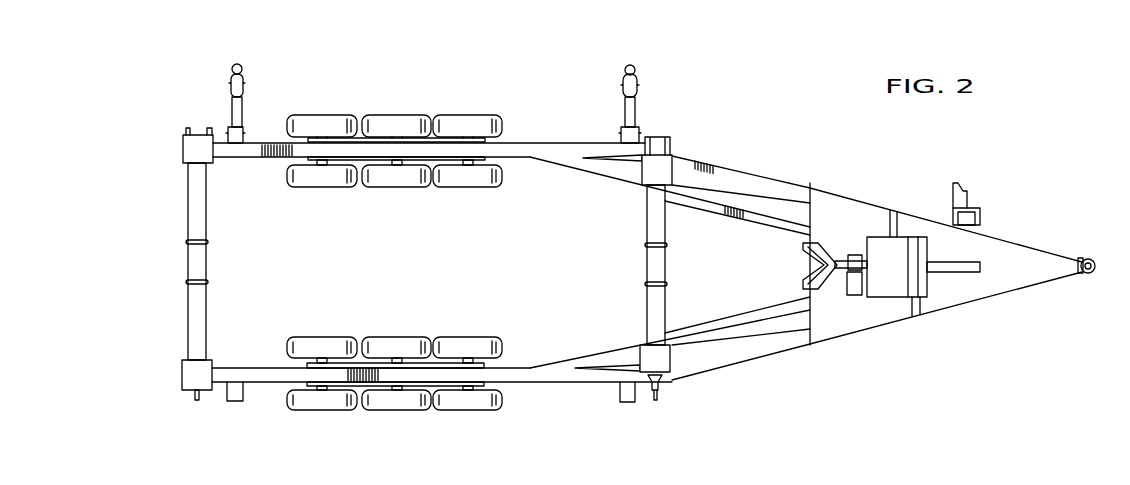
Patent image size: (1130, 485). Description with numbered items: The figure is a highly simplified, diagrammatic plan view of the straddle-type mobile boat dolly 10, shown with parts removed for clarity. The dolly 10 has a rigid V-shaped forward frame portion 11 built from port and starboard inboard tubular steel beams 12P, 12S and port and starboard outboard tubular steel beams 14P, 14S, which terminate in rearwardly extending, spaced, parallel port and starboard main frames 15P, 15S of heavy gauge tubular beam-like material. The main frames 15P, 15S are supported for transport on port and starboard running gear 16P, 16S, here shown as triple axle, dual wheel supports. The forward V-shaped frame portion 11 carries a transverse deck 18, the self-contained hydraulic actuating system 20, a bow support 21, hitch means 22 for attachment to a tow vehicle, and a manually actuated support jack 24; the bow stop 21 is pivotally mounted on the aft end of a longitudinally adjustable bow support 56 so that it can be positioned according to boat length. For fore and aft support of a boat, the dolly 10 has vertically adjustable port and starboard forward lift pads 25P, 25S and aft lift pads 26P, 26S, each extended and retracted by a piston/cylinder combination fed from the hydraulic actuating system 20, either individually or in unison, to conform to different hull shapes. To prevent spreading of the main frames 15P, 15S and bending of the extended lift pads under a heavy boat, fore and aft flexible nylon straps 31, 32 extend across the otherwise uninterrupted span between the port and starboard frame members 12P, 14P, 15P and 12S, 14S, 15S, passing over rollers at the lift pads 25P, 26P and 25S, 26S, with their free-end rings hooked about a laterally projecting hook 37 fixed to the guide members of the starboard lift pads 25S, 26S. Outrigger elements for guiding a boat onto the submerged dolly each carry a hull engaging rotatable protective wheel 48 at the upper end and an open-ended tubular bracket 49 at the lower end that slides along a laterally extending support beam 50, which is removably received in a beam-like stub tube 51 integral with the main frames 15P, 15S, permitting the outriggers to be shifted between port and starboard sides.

The straddle-type mobile boat dolly 10 is at (706, 113).
The V-shaped forward frame portion 11 is at (866, 345).
The port inboard tubular steel beam 12P is at (740, 203).
The starboard inboard tubular steel beam 12S is at (730, 315).
The port outboard tubular steel beam 14P is at (782, 177).
The starboard outboard tubular steel beam 14S is at (766, 357).
The port main frame 15P is at (512, 147).
The starboard main frame 15S is at (508, 383).
The port running gear 16P is at (427, 108).
The starboard running gear 16S is at (340, 417).
The transverse deck 18 is at (1003, 282).
The self-contained hydraulic actuating system 20 is at (880, 240).
The bow support 21 is at (803, 276).
The hitch means 22 is at (1098, 255).
The manually actuated support jack 24 is at (982, 222).
The port forward lift pad 25P is at (663, 165).
The starboard forward lift pad 25S is at (670, 357).
The port aft lift pad 26P is at (183, 150).
The starboard aft lift pad 26S is at (182, 373).
The fore flexible strap 31 is at (652, 303).
The aft flexible strap 32 is at (190, 220).
The laterally projecting hook 37 is at (194, 393).
The hull engaging rotatable protective wheel 48 is at (233, 69).
The open-ended tubular bracket 49 is at (231, 86).
The laterally extending support beam 50 is at (233, 112).
The beam-like stub tube 51 is at (228, 133).
The longitudinally adjustable bow support 56 is at (963, 273).